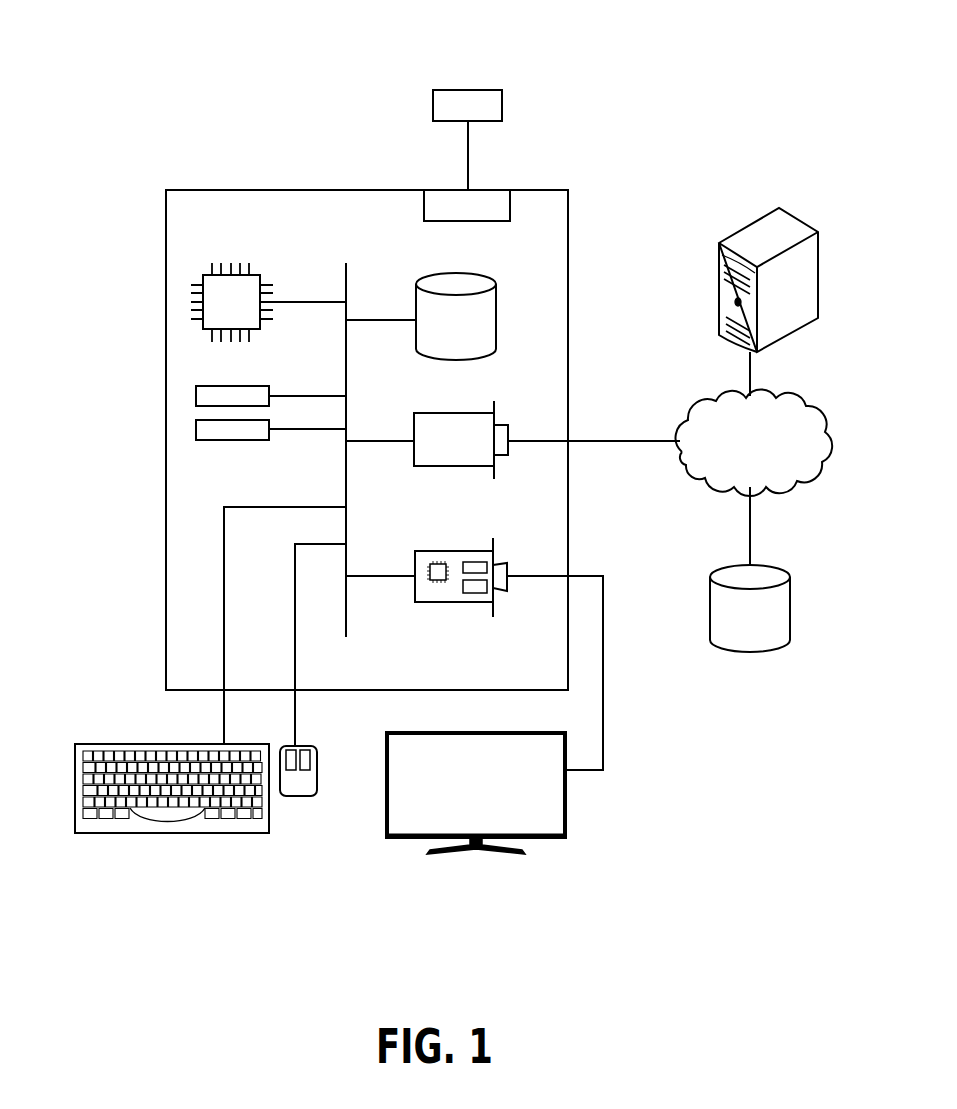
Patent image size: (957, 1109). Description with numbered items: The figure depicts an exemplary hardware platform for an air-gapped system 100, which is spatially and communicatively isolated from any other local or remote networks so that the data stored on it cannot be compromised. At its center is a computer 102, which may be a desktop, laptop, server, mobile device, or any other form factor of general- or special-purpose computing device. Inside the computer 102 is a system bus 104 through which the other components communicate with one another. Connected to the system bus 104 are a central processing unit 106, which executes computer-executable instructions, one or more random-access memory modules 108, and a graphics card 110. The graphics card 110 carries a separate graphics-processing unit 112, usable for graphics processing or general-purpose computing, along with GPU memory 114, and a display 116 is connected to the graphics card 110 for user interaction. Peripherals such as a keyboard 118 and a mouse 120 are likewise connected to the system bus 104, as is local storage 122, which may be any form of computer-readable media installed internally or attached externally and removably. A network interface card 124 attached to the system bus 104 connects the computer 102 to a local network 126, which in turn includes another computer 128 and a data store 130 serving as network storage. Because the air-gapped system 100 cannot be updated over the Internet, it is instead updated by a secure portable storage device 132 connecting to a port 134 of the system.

The air-gapped system 100 is at (212, 72).
The computer 102 is at (212, 190).
The system bus 104 is at (348, 273).
The central processing unit 106 is at (257, 275).
The random-access memory modules 108 is at (270, 423).
The graphics card 110 is at (413, 562).
The graphics-processing unit 112 is at (437, 582).
The GPU memory 114 is at (472, 593).
The display 116 is at (567, 822).
The keyboard 118 is at (173, 835).
The mouse 120 is at (295, 797).
The local storage 122 is at (497, 302).
The network interface card 124 is at (413, 425).
The local network 126 is at (803, 400).
The computer 128 is at (803, 220).
The data store 130 is at (782, 564).
The secure portable storage device 132 is at (492, 89).
The port 134 is at (433, 190).